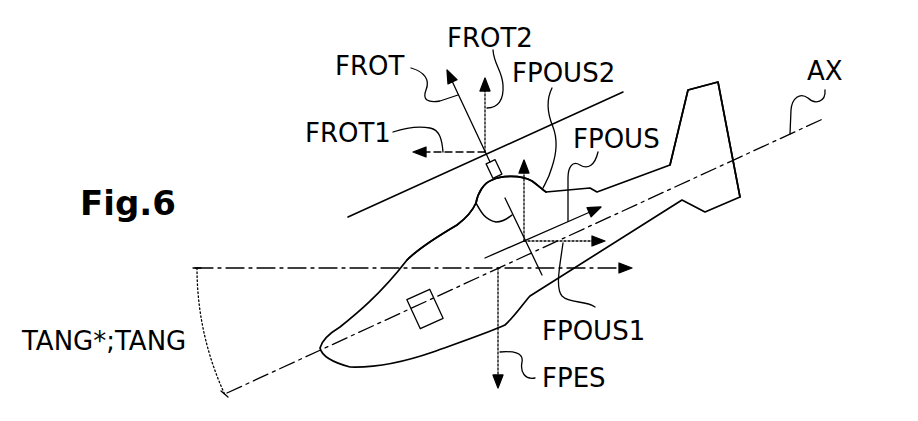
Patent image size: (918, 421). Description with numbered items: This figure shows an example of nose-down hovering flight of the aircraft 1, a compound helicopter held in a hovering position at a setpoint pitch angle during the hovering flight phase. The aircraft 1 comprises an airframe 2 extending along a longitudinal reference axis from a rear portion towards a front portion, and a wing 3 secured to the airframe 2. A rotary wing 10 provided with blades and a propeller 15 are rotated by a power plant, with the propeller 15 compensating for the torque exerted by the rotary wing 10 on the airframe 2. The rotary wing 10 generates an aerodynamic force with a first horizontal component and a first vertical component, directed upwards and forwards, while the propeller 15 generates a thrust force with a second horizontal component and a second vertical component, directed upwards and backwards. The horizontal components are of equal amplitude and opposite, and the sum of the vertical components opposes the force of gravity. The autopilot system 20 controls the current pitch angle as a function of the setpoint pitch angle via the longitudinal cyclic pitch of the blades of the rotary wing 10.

The aircraft 1 is at (725, 62).
The airframe 2 is at (681, 118).
The wing 3 is at (418, 254).
The rotary wing 10 is at (357, 213).
The propeller 15 is at (478, 202).
The autopilot system 20 is at (418, 325).